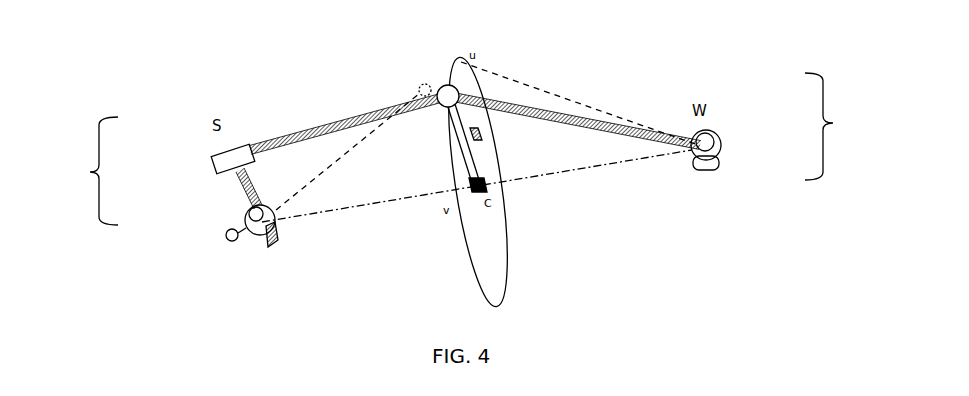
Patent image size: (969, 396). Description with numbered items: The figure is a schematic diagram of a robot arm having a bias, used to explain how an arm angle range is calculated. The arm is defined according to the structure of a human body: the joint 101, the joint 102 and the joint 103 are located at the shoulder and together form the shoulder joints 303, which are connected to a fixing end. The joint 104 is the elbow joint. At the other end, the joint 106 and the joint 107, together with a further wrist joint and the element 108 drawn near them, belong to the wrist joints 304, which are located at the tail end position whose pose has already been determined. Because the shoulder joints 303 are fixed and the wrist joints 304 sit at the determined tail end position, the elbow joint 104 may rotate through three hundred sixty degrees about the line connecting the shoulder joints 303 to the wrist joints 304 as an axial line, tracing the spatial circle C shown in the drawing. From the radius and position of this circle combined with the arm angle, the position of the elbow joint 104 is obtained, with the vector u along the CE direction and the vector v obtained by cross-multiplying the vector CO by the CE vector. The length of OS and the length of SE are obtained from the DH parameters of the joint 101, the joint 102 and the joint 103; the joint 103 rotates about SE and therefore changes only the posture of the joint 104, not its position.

The joint 101 is at (230, 228).
The joint 102 is at (247, 210).
The joint 103 is at (217, 155).
The joint 104 is at (445, 90).
The joint 106 is at (722, 153).
The joint 107 is at (710, 130).
The housing 108 is at (712, 142).
The shoulder joints 303 is at (78, 171).
The wrist joints 304 is at (844, 126).